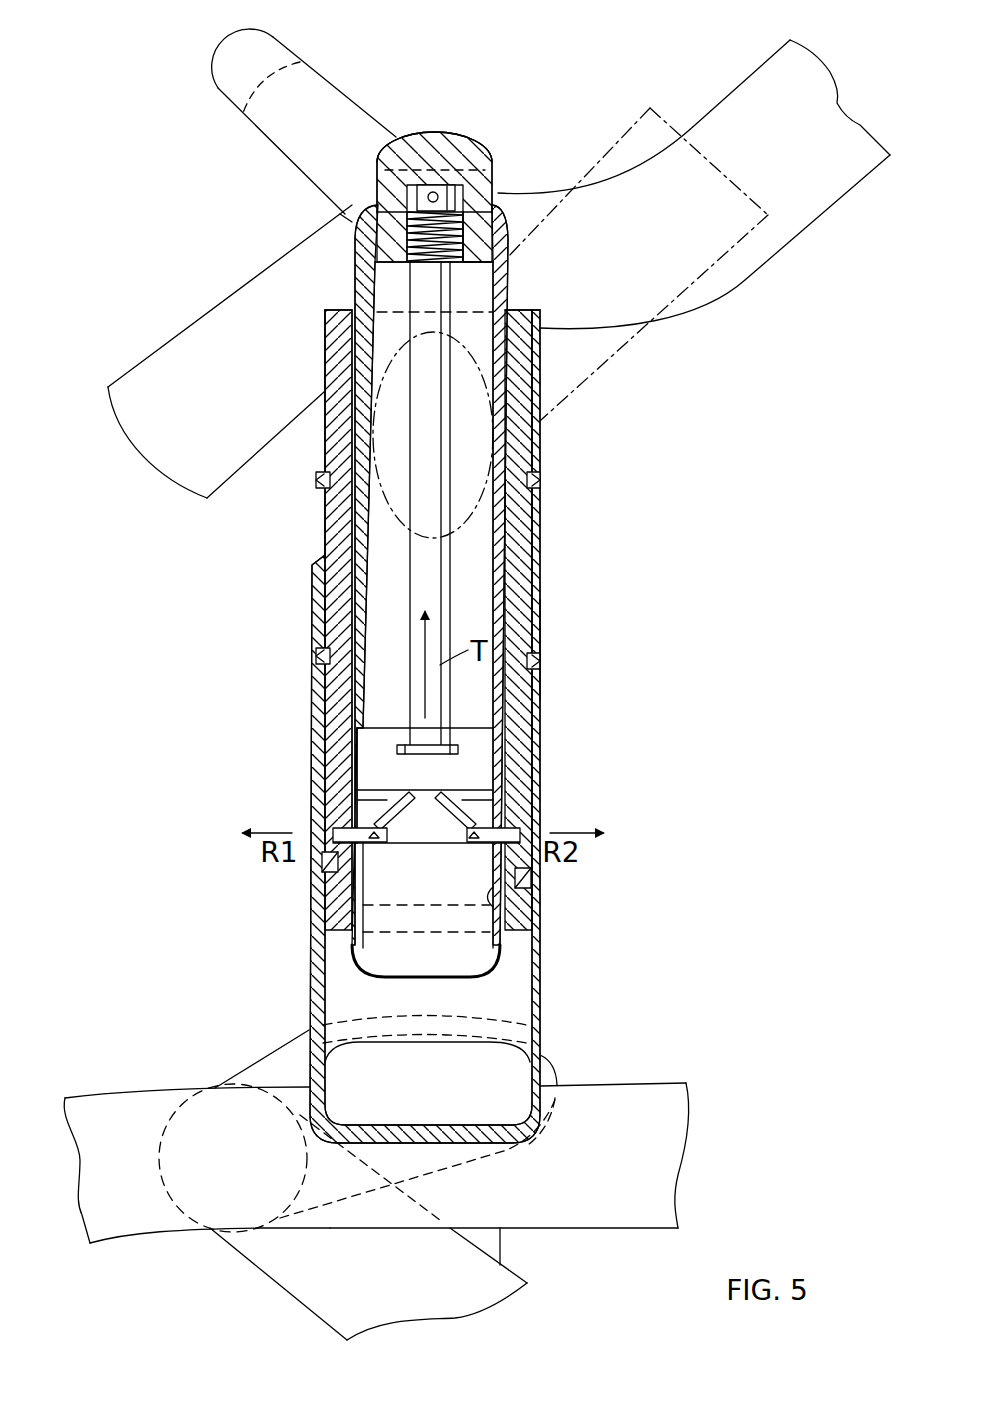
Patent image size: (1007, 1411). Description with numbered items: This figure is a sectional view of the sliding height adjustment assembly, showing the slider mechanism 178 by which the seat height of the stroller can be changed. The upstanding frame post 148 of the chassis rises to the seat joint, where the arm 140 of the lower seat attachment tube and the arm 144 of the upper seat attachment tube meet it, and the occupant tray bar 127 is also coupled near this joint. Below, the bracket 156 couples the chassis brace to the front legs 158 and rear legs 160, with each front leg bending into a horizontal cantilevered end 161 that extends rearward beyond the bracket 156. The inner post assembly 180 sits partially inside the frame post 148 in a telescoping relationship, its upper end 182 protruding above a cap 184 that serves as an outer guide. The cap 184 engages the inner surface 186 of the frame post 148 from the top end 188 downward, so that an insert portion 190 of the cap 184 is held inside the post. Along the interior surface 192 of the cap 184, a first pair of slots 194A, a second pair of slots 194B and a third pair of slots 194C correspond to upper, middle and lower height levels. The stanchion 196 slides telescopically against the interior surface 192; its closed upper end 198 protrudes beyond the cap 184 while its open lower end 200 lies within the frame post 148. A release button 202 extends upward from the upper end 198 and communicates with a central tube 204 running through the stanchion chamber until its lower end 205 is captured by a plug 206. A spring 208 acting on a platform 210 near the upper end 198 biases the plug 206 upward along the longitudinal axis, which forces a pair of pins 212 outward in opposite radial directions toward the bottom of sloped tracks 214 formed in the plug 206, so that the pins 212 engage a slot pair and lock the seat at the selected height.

The occupant tray bar 127 is at (240, 57).
The arm of the upper seat attachment tube 144 is at (733, 95).
The arm of the lower seat attachment tube 140 is at (210, 302).
The front legs 158 is at (100, 1095).
The cantilevered end 161 is at (635, 1089).
The rear legs 160 is at (250, 1263).
The bracket 156 is at (245, 1066).
The slider mechanism 178 is at (660, 613).
The inner post assembly 180 is at (438, 126).
The upper end 182 is at (340, 226).
The cap 184 is at (546, 490).
The inner surface 186 is at (326, 560).
The top end 188 is at (541, 565).
The insert portion 190 is at (322, 745).
The interior surface 192 is at (534, 529).
The first pair of slots 194A is at (545, 480).
The second pair of slots 194B is at (328, 655).
The third pair of slots 194C is at (332, 862).
The stanchion 196 is at (510, 293).
The upper end 198 is at (520, 207).
The lower end 200 is at (541, 922).
The release button 202 is at (470, 150).
The central tube 204 is at (455, 360).
The lower end 205 is at (448, 754).
The plug 206 is at (357, 945).
The spring 208 is at (403, 253).
The platform 210 is at (497, 233).
The pins 212 is at (333, 832).
The tracks 214 is at (395, 790).
The frame post 148 is at (541, 757).